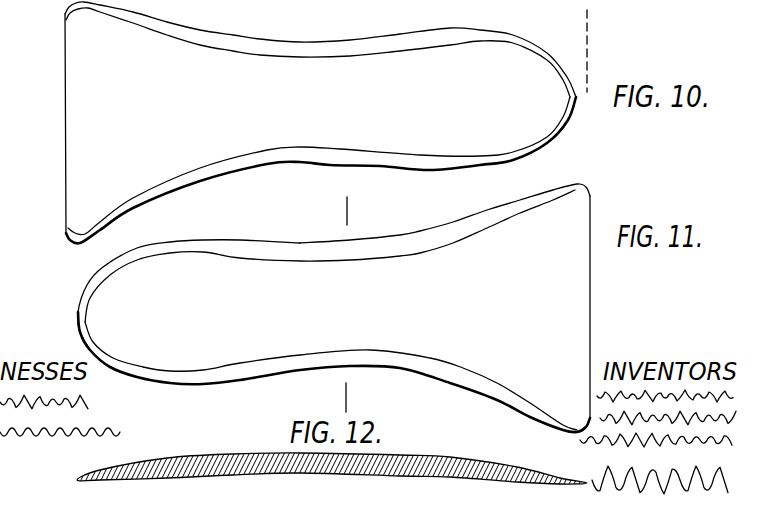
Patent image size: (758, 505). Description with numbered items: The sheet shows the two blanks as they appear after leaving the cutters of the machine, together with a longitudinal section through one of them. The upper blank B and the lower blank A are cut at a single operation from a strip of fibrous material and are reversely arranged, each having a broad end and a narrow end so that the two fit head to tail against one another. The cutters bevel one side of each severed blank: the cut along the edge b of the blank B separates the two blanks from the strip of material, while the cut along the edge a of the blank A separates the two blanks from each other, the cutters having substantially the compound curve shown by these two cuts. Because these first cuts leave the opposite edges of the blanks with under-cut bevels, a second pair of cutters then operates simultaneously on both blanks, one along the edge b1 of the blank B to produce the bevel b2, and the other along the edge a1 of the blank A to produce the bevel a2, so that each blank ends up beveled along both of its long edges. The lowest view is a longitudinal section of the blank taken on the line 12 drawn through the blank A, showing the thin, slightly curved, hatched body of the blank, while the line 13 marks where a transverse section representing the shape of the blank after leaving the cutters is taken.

In FIG. 10, the blank B is at (320, 123).
In FIG. 10, the beveled edge cut b is at (288, 28).
In FIG. 10, the edge of blank B b1 is at (317, 163).
In FIG. 10, the bevel on blank B b2 is at (377, 157).
In FIG. 11, the blank A is at (334, 308).
In FIG. 11, the beveled edge cut a is at (266, 250).
In FIG. 11, the edge of blank A a1 is at (318, 367).
In FIG. 11, the bevel on blank A a2 is at (408, 336).
In FIG. 11, the section line 12— 12 is at (52, 317).
In FIG. 10, the section line 13— 13 is at (360, 209).
In FIG. 11, the section line 13— 13 is at (359, 396).